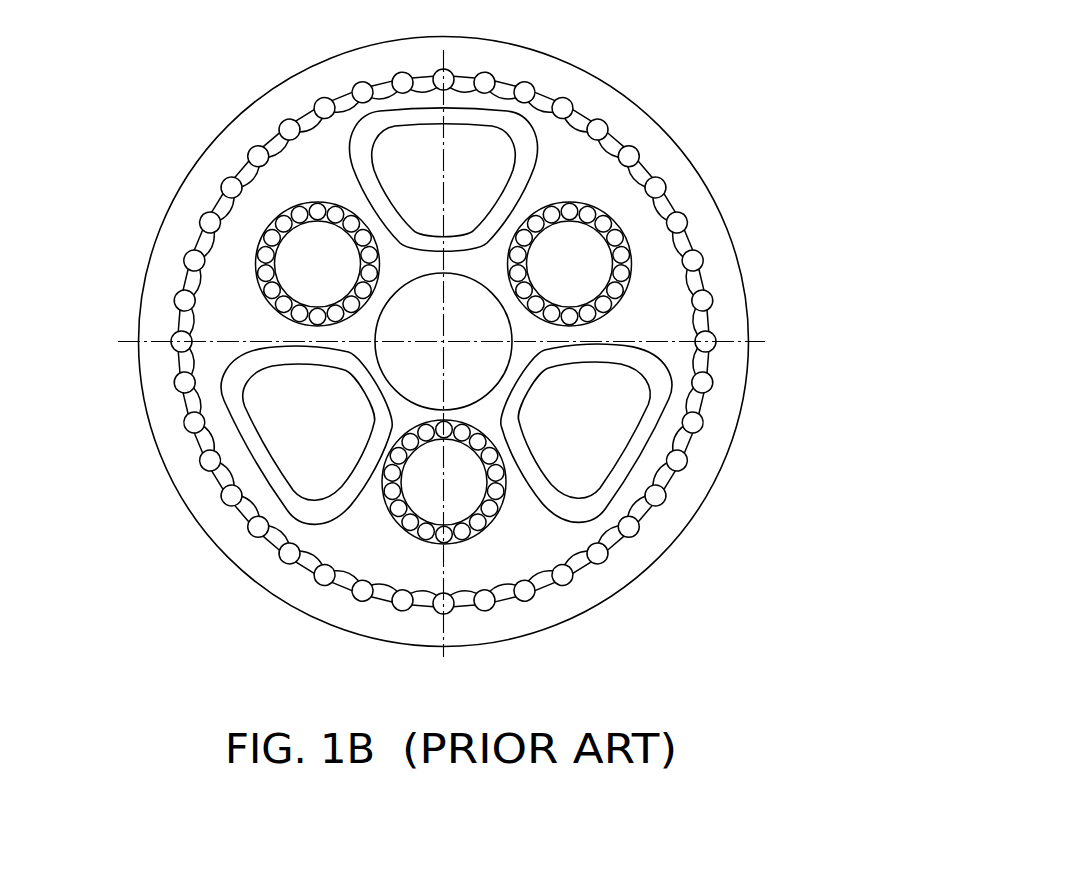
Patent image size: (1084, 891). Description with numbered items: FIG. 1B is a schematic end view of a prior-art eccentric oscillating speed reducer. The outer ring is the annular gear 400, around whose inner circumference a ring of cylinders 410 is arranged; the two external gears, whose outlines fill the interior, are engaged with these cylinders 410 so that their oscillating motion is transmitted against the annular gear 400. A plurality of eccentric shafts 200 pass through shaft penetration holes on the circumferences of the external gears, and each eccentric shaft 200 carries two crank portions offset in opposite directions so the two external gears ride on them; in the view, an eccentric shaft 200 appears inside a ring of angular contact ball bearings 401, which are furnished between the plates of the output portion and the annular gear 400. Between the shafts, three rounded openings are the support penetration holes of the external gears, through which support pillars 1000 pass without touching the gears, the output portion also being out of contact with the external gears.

The support pillar 1000 is at (613, 438).
The annular gear 400 is at (702, 215).
The cylinder 410 is at (602, 553).
The angular contact ball bearing 401 is at (583, 203).
The eccentric shaft 200 is at (593, 247).